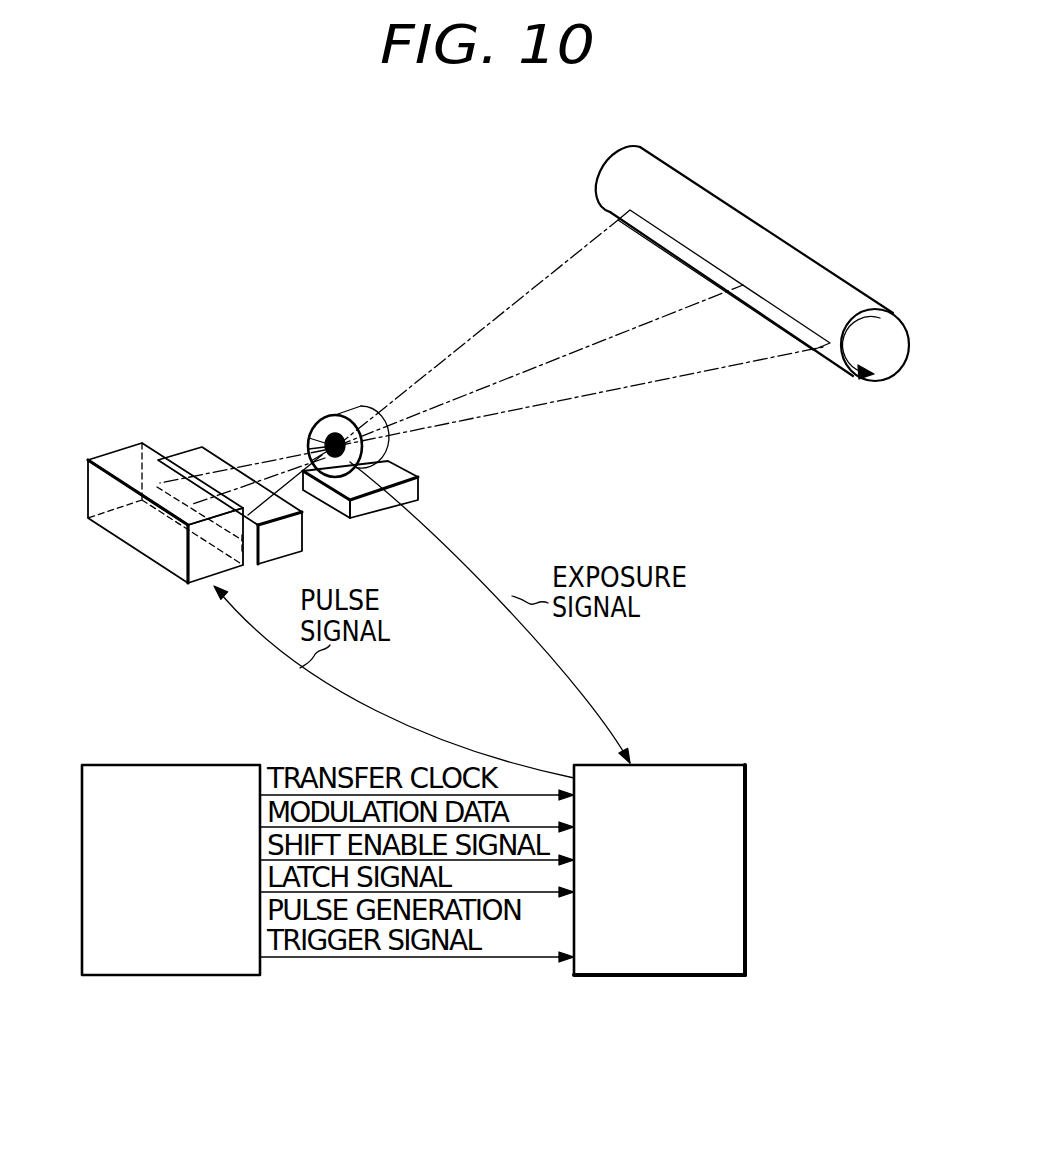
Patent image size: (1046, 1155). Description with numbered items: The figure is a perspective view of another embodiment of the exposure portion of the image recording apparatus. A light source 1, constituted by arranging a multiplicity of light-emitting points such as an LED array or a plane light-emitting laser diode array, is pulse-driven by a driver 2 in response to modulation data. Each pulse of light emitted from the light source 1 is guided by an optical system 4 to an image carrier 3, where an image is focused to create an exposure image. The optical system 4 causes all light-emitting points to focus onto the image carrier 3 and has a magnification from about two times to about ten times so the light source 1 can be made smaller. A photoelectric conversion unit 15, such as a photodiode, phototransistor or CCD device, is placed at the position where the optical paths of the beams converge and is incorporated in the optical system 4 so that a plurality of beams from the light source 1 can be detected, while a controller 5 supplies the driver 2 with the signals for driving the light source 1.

The light source 1 is at (117, 452).
The driver 2 is at (683, 763).
The image carrier 3 is at (620, 165).
The optical system 4 is at (320, 427).
The controller 5 is at (187, 763).
The photoelectric conversion unit 15 is at (368, 452).